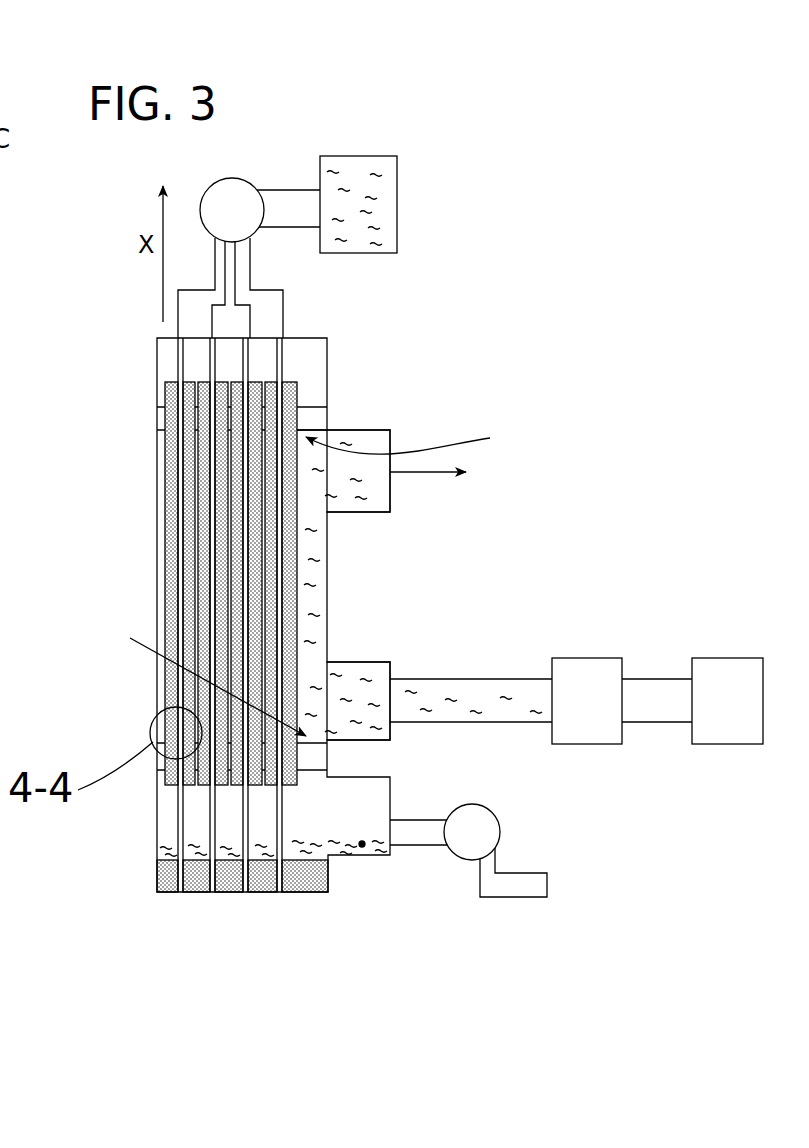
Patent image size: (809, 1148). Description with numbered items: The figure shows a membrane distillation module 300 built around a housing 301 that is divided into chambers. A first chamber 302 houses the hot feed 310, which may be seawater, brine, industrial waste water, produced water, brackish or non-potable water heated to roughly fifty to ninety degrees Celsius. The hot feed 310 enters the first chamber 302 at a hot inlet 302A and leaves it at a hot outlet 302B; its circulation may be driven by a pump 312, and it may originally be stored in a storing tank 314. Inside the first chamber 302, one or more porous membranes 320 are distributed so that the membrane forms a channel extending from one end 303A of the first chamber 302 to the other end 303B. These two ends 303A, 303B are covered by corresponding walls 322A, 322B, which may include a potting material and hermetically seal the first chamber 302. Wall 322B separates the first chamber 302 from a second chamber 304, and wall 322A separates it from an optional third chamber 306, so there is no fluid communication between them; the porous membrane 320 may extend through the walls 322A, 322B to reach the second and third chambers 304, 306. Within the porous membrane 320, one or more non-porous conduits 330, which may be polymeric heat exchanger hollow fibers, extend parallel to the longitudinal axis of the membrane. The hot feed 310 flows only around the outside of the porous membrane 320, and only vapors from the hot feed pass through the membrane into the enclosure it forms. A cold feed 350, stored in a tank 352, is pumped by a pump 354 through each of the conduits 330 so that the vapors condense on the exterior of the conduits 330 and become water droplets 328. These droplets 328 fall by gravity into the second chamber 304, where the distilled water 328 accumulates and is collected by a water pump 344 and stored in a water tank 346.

The membrane distillation module 300 is at (588, 206).
The housing 301 is at (327, 365).
The first chamber 302 is at (312, 600).
The hot inlet 302A is at (390, 668).
The hot outlet 302B is at (380, 430).
The end of the first chamber 303A is at (430, 438).
The end of the first chamber 303B is at (184, 679).
The second chamber 304 is at (354, 822).
The third chamber 306 is at (303, 350).
The hot feed 310 is at (431, 476).
The pump 312 is at (575, 658).
The storing tank 314 is at (722, 658).
The porous membrane 320 is at (155, 470).
The wall 322A is at (320, 413).
The wall 322B is at (330, 758).
The water droplets 328 is at (363, 846).
The non-porous conduits 330 is at (176, 820).
The water pump 344 is at (500, 824).
The water tank 346 is at (548, 886).
The cold feed 350 is at (358, 193).
The tank 352 is at (368, 156).
The pump 354 is at (234, 190).